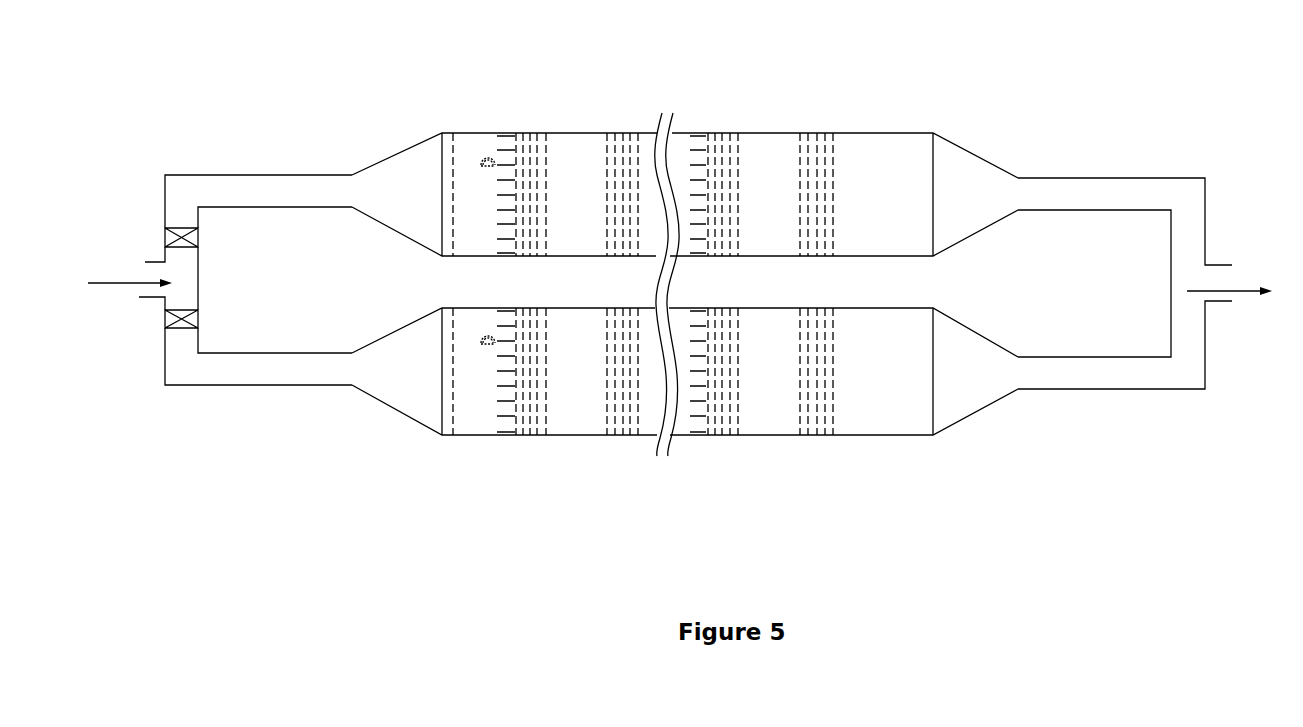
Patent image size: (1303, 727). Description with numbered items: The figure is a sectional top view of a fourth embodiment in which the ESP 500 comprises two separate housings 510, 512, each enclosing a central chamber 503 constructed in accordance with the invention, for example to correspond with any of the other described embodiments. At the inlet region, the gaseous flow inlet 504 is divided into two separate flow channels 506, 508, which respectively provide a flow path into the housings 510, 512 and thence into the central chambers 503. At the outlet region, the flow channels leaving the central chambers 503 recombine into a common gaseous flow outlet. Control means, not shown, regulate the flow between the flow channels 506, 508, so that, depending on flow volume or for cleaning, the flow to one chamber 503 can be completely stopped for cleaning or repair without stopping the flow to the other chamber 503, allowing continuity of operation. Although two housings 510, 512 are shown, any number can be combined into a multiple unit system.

The ESP 500 is at (339, 35).
The central chamber 503 is at (578, 155).
The gaseous flow inlet 504 is at (143, 270).
The flow channel 506 is at (187, 190).
The flow channel 508 is at (174, 369).
The housing 510 is at (416, 117).
The housing 512 is at (414, 458).